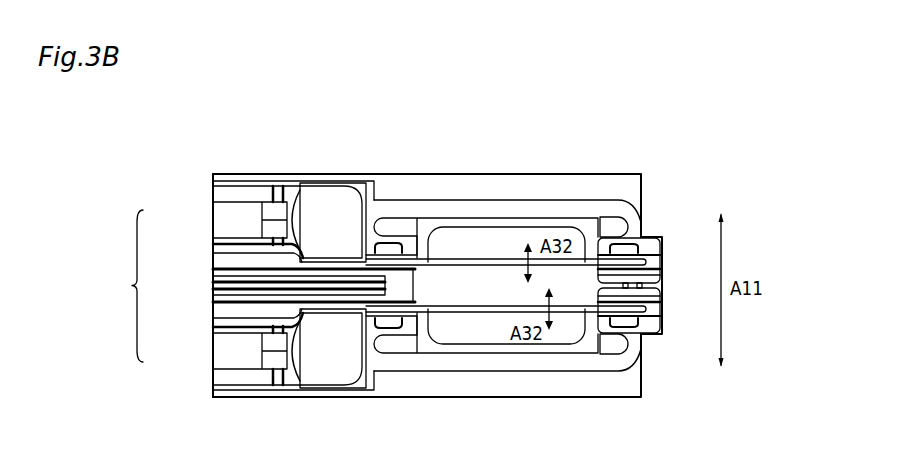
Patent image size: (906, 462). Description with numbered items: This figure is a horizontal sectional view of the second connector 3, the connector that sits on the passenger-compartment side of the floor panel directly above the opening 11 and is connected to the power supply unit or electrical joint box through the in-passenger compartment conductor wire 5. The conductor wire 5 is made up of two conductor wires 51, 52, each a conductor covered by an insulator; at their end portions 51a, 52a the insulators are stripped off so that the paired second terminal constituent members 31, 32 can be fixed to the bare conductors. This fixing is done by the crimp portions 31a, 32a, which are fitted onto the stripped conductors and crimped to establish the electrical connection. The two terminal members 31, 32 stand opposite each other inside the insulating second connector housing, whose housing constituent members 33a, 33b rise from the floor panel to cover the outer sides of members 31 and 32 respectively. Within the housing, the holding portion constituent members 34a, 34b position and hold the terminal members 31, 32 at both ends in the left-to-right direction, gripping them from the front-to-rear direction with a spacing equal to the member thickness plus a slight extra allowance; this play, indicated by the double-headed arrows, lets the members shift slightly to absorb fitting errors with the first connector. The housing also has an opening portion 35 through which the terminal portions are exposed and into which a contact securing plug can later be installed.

The second connector 3 is at (671, 172).
The in-passenger compartment conductor wire 5 is at (129, 286).
The opening 11 is at (500, 344).
The second terminal constituent member 31 is at (485, 260).
The crimp portion 31a is at (292, 202).
The second terminal constituent member 32 is at (481, 311).
The crimp portion 32a is at (292, 369).
The second connector housing constituent member 33a is at (357, 178).
The second connector housing constituent member 33b is at (357, 393).
The holding portion constituent member 34a is at (573, 202).
The holding portion constituent member 34b is at (573, 369).
The opening portion 35 is at (518, 217).
The conductor wire 51 is at (218, 222).
The end portion 51a is at (253, 197).
The conductor wire 52 is at (218, 350).
The end portion 52a is at (253, 375).